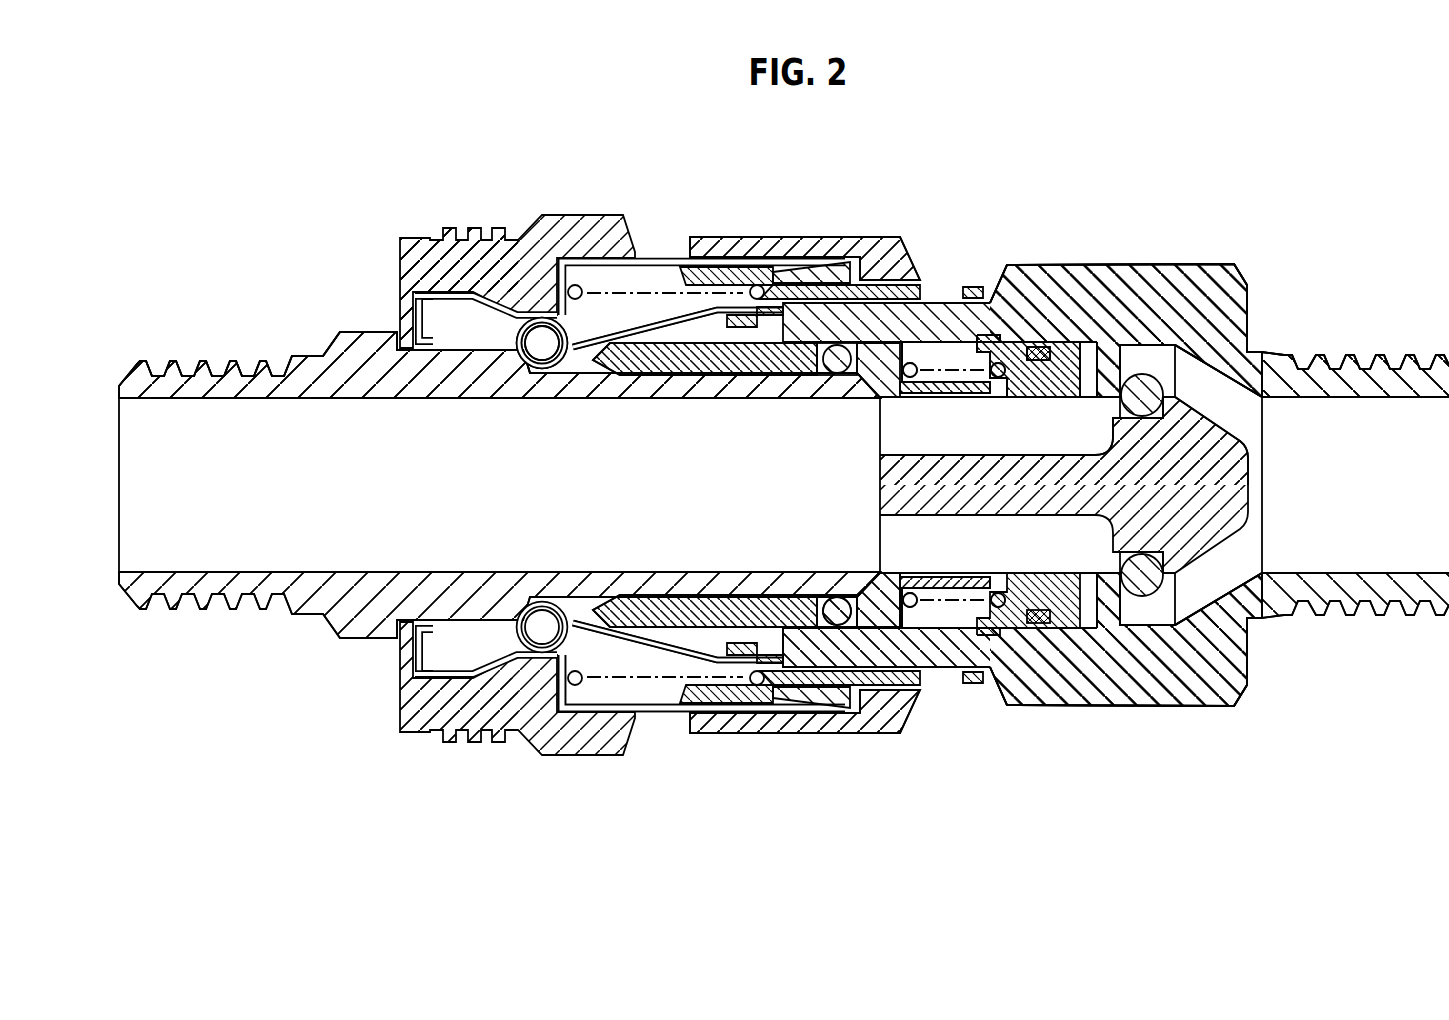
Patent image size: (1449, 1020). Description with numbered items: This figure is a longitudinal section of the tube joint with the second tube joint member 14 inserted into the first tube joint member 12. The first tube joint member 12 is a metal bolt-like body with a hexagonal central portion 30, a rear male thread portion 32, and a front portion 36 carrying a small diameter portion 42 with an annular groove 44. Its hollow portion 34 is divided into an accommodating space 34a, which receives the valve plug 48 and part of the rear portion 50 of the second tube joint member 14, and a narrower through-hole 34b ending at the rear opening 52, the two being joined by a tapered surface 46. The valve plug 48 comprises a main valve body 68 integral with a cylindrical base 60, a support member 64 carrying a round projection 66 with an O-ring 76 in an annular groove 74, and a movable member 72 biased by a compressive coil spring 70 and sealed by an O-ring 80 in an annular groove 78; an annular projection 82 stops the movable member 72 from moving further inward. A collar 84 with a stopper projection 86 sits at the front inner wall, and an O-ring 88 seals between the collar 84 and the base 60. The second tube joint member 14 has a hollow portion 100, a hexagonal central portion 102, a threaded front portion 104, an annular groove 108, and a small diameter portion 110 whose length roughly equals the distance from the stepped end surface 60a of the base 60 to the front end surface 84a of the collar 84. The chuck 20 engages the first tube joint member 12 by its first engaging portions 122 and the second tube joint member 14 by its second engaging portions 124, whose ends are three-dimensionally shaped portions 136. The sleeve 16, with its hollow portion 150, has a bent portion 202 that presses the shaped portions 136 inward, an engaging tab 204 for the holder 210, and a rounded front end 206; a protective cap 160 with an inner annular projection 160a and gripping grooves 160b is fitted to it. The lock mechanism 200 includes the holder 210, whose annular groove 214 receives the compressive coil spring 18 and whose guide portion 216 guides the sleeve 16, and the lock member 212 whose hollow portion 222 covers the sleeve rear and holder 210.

The first tube joint member 12 is at (1165, 264).
The second tube joint member 14 is at (297, 353).
The sleeve 16 is at (405, 248).
The compressive coil spring 18 is at (550, 216).
The chuck 20 is at (592, 330).
The central portion 30 is at (1100, 264).
The male thread portion 32 is at (1355, 356).
The hollow portion 34 is at (1262, 620).
The accommodating space 34a is at (1145, 612).
The through-hole 34b is at (1388, 605).
The front portion 36 is at (955, 345).
The small diameter portion 42 is at (698, 360).
The annular groove 44 is at (750, 287).
The tapered surface 46 is at (1240, 608).
The valve plug 48 is at (1088, 392).
The rear portion 50 is at (782, 572).
The opening 52 is at (1412, 410).
The base 60 is at (870, 660).
The stepped end surface 60a is at (870, 390).
The support member 64 is at (975, 500).
The projection 66 is at (1200, 430).
The main valve body 68 is at (892, 630).
The compressive coil spring 70 is at (915, 352).
The movable member 72 is at (1005, 632).
The annular groove 74 is at (1155, 385).
The O-ring 76 is at (1168, 352).
The annular groove 78 is at (992, 338).
The O-ring 80 is at (1038, 348).
The annular projection 82 is at (1080, 660).
The collar 84 is at (690, 665).
The front end surface 84a is at (600, 622).
The annular projection 86 is at (625, 700).
The O-ring 88 is at (836, 600).
The hollow portion 100 is at (195, 540).
The central portion 102 is at (345, 636).
The front portion 104 is at (175, 368).
The annular groove 108 is at (498, 740).
The small diameter portion 110 is at (780, 378).
The first engaging portions 122 is at (732, 628).
The second engaging portions 124 is at (603, 350).
The three-dimensionally shaped portion 136 is at (540, 368).
The hollow portion 150 is at (600, 260).
The protective cap 160 is at (418, 240).
The annular projection 160a is at (449, 230).
The annular grooves 160b is at (476, 230).
The lock mechanism 200 is at (805, 237).
The bent portion 202 is at (520, 296).
The engaging tab 204 is at (790, 276).
The front end 206 is at (420, 300).
The holder 210 is at (838, 292).
The lock member 212 is at (880, 237).
The annular groove 214 is at (742, 314).
The guide portion 216 is at (685, 270).
The hollow portion 222 is at (815, 713).